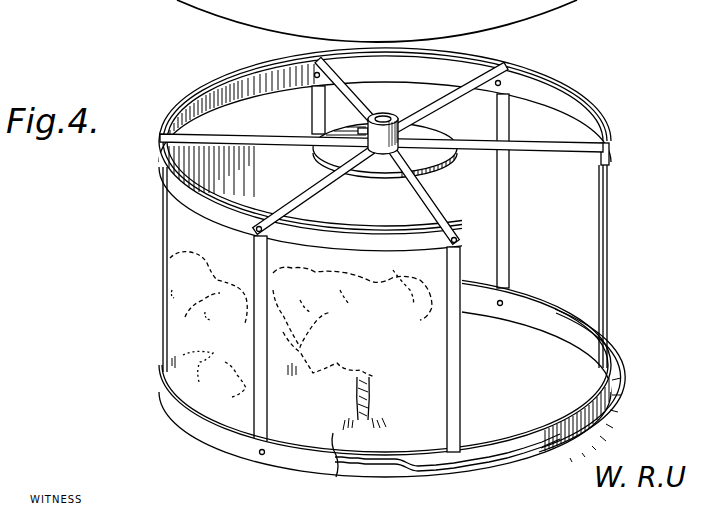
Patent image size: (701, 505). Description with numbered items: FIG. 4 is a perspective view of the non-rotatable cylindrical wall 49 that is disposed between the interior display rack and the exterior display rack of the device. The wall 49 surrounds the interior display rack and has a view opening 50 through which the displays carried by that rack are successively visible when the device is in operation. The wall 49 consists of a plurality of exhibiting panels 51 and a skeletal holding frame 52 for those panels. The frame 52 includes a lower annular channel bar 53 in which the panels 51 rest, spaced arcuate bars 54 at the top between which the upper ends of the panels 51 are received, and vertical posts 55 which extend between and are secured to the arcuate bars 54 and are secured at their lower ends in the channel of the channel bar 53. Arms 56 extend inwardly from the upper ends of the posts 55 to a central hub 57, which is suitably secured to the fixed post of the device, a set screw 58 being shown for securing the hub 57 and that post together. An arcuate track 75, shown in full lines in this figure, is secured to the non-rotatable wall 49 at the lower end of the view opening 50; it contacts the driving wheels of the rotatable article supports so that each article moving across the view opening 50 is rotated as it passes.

The non-rotatable cylindrical wall 49 is at (160, 353).
The view opening 50 is at (596, 279).
The exhibiting panels 51 is at (187, 383).
The skeletal holding frame 52 is at (464, 384).
The lower annular channel bar 53 is at (283, 458).
The arcuate bars 54 is at (597, 88).
The vertical posts 55 is at (313, 172).
The arms 56 is at (557, 144).
The hub 57 is at (397, 118).
The set screw 58 is at (313, 121).
The arcuate track 75 is at (621, 334).